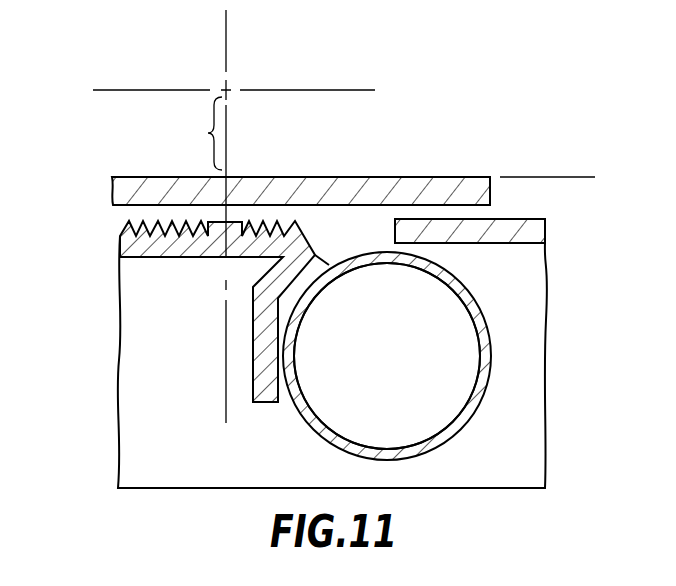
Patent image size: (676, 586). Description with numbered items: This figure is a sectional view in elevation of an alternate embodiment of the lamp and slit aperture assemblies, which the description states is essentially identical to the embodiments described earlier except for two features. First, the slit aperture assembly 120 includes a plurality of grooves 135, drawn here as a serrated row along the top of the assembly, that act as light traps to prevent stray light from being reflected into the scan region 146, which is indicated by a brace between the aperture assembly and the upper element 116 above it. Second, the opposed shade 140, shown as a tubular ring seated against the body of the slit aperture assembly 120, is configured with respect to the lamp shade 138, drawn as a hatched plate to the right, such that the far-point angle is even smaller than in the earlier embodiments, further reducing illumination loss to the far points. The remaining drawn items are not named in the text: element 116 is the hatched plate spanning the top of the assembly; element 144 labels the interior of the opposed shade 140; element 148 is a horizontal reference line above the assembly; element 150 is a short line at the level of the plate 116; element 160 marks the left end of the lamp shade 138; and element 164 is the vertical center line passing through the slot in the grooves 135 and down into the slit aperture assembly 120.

The upper plate 116 is at (380, 177).
The slit aperture assembly 120 is at (112, 352).
The grooves 135 is at (116, 222).
The lamp shade 138 is at (518, 219).
The opposed shade 140 is at (342, 273).
The tube bore 144 is at (487, 336).
The scan region 146 is at (189, 133).
The reference line 148 is at (323, 90).
The reference line 150 is at (560, 177).
The plate edge 160 is at (395, 229).
The center axis 164 is at (223, 32).